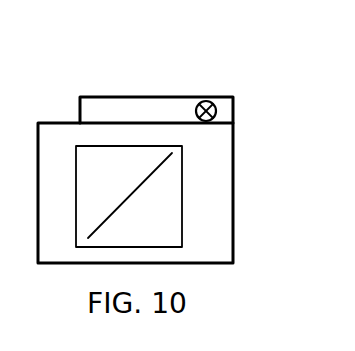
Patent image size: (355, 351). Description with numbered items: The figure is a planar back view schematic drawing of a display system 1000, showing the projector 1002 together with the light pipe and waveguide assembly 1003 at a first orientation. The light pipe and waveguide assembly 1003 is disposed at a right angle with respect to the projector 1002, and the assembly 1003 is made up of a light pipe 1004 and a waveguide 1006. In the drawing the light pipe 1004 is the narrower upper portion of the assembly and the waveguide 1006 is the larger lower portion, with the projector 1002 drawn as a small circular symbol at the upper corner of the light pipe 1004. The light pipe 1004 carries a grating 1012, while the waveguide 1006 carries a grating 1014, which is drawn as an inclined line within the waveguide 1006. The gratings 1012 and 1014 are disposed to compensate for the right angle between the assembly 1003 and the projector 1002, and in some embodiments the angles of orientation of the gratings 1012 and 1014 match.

The display system 1000 is at (189, 47).
The projector 1002 is at (208, 100).
The light pipe and waveguide assembly 1003 is at (257, 230).
The light pipe 1004 is at (143, 107).
The waveguide 1006 is at (234, 195).
The grating 1012 is at (217, 114).
The grating 1014 is at (147, 182).